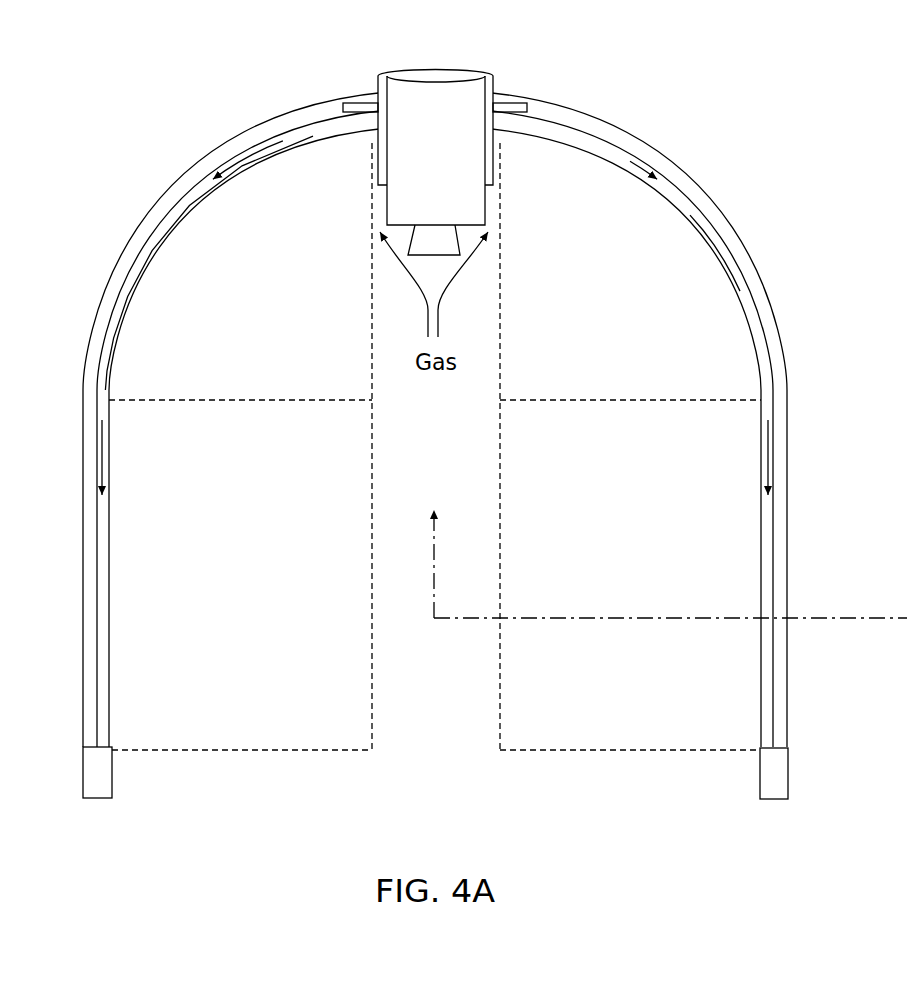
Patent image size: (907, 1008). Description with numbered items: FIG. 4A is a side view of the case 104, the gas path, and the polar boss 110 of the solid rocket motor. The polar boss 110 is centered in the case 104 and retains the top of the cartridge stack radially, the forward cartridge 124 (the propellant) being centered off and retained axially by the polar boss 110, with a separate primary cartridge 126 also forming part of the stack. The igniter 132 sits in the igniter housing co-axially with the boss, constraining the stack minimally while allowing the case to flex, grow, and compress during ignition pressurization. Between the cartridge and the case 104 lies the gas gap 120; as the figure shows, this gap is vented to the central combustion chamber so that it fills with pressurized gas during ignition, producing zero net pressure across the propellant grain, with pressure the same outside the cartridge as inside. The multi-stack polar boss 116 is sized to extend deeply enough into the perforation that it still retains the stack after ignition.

The composite case 104 is at (470, 444).
The polar boss 110 is at (425, 73).
The igniter 132 is at (465, 123).
The gas gap 120 is at (660, 151).
The forward cartridge 124 is at (722, 370).
The primary cartridge 126 is at (722, 565).
The multi-stack polar boss 116 is at (468, 517).